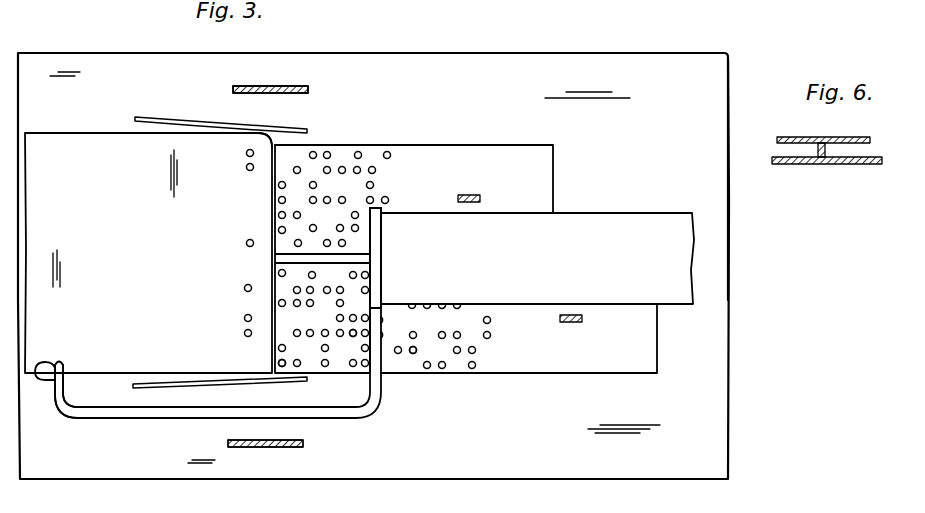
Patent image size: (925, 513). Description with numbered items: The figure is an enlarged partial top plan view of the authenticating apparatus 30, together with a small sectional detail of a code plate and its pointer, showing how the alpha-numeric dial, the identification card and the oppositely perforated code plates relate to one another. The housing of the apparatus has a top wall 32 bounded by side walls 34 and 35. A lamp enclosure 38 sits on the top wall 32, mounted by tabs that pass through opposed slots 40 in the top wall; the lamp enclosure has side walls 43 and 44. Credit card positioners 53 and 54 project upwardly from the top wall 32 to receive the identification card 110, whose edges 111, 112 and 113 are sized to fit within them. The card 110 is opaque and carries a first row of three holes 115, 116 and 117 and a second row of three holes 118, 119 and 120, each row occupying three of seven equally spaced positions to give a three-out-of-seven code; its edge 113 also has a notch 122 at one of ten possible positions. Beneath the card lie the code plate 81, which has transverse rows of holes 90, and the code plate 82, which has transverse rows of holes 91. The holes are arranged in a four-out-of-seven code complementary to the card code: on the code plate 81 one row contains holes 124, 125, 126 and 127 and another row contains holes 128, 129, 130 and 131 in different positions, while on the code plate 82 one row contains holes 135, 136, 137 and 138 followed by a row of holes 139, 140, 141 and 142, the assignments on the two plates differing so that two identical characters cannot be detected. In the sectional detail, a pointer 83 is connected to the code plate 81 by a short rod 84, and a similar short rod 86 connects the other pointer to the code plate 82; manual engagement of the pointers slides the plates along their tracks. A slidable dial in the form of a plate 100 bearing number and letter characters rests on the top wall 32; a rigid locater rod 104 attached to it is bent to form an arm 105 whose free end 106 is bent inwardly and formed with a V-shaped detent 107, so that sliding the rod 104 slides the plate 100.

In FIG. 3, the authenticating apparatus 30 is at (748, 377).
In FIG. 3, the top wall 32 is at (447, 67).
In FIG. 3, the side wall 34 is at (703, 53).
In FIG. 3, the side wall 35 is at (692, 480).
In FIG. 3, the lamp enclosure 38 is at (309, 87).
In FIG. 3, the slots 40 is at (300, 86).
In FIG. 3, the side wall 43 is at (268, 86).
In FIG. 3, the side wall 44 is at (287, 447).
In FIG. 3, the credit card positioner 53 is at (191, 125).
In FIG. 3, the credit card positioner 54 is at (186, 389).
In FIG. 3, the code plate 81 is at (432, 152).
In FIG. 6, the code plate 81 is at (850, 165).
In FIG. 3, the code plate 82 is at (505, 370).
In FIG. 6, the pointer 83 is at (803, 137).
In FIG. 3, the short rod 84 is at (470, 195).
In FIG. 6, the short rod 84 is at (818, 152).
In FIG. 3, the short rod 86 is at (575, 323).
In FIG. 3, the holes 90 is at (378, 155).
In FIG. 3, the holes 91 is at (349, 344).
In FIG. 3, the plate 100 is at (633, 227).
In FIG. 3, the locater rod 104 is at (377, 237).
In FIG. 3, the arm 105 is at (148, 418).
In FIG. 3, the free end 106 is at (53, 407).
In FIG. 3, the V-shaped detent 107 is at (60, 388).
In FIG. 3, the identification card 110 is at (68, 150).
In FIG. 3, the edge 111 is at (97, 133).
In FIG. 3, the edge 112 is at (291, 138).
In FIG. 3, the edge 113 is at (120, 378).
In FIG. 3, the hole 115 is at (243, 153).
In FIG. 3, the hole 116 is at (243, 168).
In FIG. 3, the hole 117 is at (244, 244).
In FIG. 3, the hole 118 is at (242, 289).
In FIG. 3, the hole 119 is at (242, 317).
In FIG. 3, the hole 120 is at (243, 335).
In FIG. 3, the notch 122 is at (41, 381).
In FIG. 3, the hole 124 is at (275, 186).
In FIG. 3, the hole 125 is at (275, 201).
In FIG. 3, the hole 126 is at (275, 216).
In FIG. 3, the hole 127 is at (292, 220).
In FIG. 3, the hole 128 is at (302, 165).
In FIG. 3, the hole 129 is at (328, 150).
In FIG. 3, the hole 130 is at (276, 231).
In FIG. 3, the hole 131 is at (301, 240).
In FIG. 3, the hole 135 is at (277, 274).
In FIG. 3, the hole 136 is at (277, 303).
In FIG. 3, the hole 137 is at (277, 348).
In FIG. 3, the hole 138 is at (277, 363).
In FIG. 3, the hole 139 is at (292, 291).
In FIG. 3, the hole 140 is at (300, 300).
In FIG. 3, the hole 141 is at (300, 337).
In FIG. 3, the hole 142 is at (281, 369).